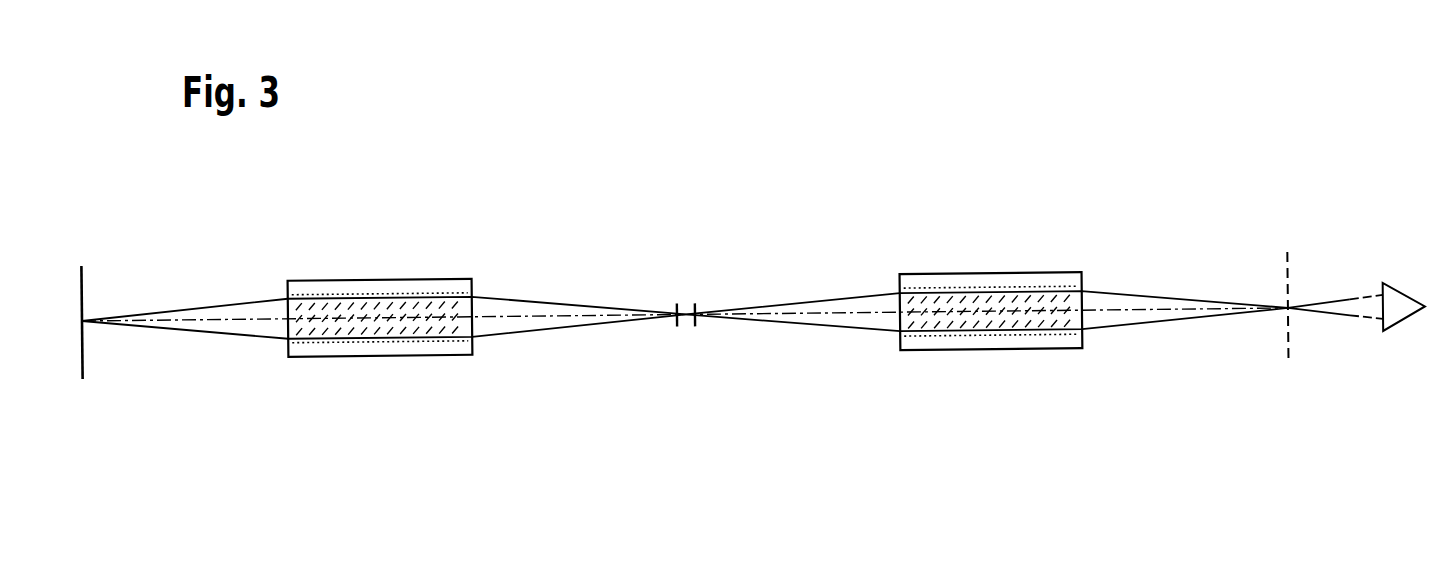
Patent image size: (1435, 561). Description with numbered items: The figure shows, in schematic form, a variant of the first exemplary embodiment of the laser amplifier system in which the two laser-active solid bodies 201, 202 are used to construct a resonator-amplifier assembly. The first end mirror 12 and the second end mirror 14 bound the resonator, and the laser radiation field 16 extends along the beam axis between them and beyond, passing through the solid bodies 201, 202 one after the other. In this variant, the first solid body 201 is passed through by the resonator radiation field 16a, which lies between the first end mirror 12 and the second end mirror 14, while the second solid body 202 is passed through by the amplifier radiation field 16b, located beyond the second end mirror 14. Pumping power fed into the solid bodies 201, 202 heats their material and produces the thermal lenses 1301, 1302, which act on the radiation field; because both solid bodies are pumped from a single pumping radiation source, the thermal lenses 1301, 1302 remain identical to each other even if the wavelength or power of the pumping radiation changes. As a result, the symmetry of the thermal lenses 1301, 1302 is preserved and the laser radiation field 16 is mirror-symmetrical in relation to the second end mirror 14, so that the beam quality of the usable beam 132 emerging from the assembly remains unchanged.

The first end mirror 12 is at (82, 290).
The second end mirror 14 is at (683, 339).
The laser radiation field 16 is at (725, 295).
The resonator radiation field 16a is at (527, 313).
The amplifier radiation field 16b is at (1115, 329).
The first solid body 201 is at (373, 353).
The second solid body 202 is at (983, 352).
The first thermal lens 1301 is at (375, 308).
The second thermal lens 1302 is at (987, 307).
The usable beam 132 is at (1347, 319).